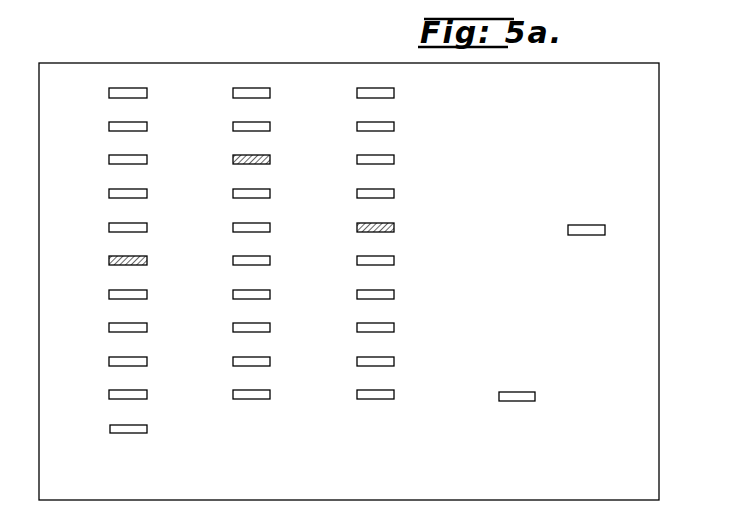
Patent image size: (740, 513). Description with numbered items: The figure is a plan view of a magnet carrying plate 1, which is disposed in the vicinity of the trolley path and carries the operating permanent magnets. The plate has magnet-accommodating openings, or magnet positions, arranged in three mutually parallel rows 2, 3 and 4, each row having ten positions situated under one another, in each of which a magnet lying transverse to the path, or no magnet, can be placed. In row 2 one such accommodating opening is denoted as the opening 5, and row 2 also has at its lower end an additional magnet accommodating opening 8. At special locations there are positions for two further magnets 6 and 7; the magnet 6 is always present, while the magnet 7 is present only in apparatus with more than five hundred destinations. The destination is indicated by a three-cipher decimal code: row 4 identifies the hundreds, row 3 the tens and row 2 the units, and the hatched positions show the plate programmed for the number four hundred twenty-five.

The magnet carrying plate 1 is at (652, 458).
The row of magnet-accommodating openings 2 is at (125, 78).
The row of magnet-accommodating openings 3 is at (246, 78).
The row of magnet-accommodating openings 4 is at (369, 78).
The magnet-accommodating opening 5 is at (145, 90).
The magnet 6 is at (575, 222).
The magnet 7 is at (505, 394).
The additional magnet accommodating opening 8 is at (140, 426).